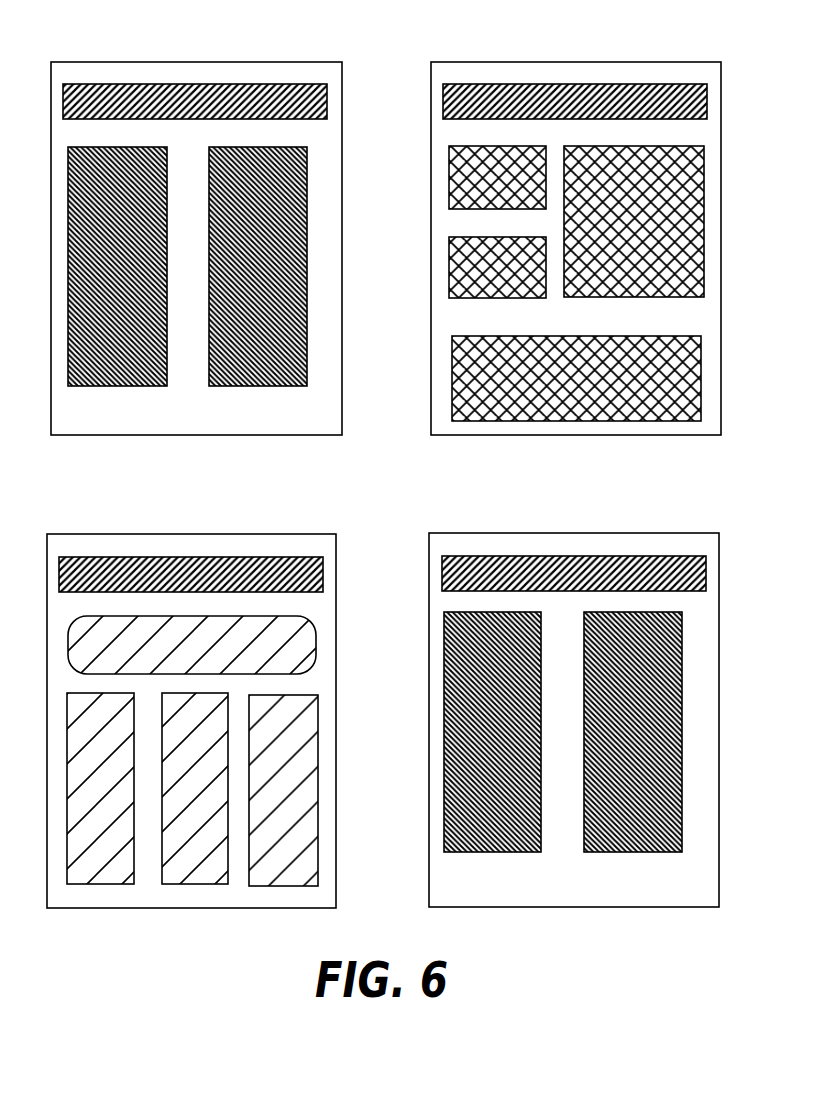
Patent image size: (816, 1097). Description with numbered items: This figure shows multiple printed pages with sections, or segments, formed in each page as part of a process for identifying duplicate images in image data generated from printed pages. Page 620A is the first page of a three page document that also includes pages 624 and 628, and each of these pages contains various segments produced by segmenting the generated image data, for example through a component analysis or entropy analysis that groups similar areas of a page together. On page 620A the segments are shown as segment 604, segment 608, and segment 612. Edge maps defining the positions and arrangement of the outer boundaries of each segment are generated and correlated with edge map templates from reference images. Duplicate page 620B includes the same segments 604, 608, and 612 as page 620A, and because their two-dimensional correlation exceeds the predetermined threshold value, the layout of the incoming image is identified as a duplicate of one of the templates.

The segment 604 is at (237, 83).
The segment 608 is at (112, 387).
The segment 612 is at (262, 387).
The page 620A is at (152, 62).
The duplicate page 620B is at (540, 533).
The page 624 is at (538, 62).
The page 628 is at (97, 534).